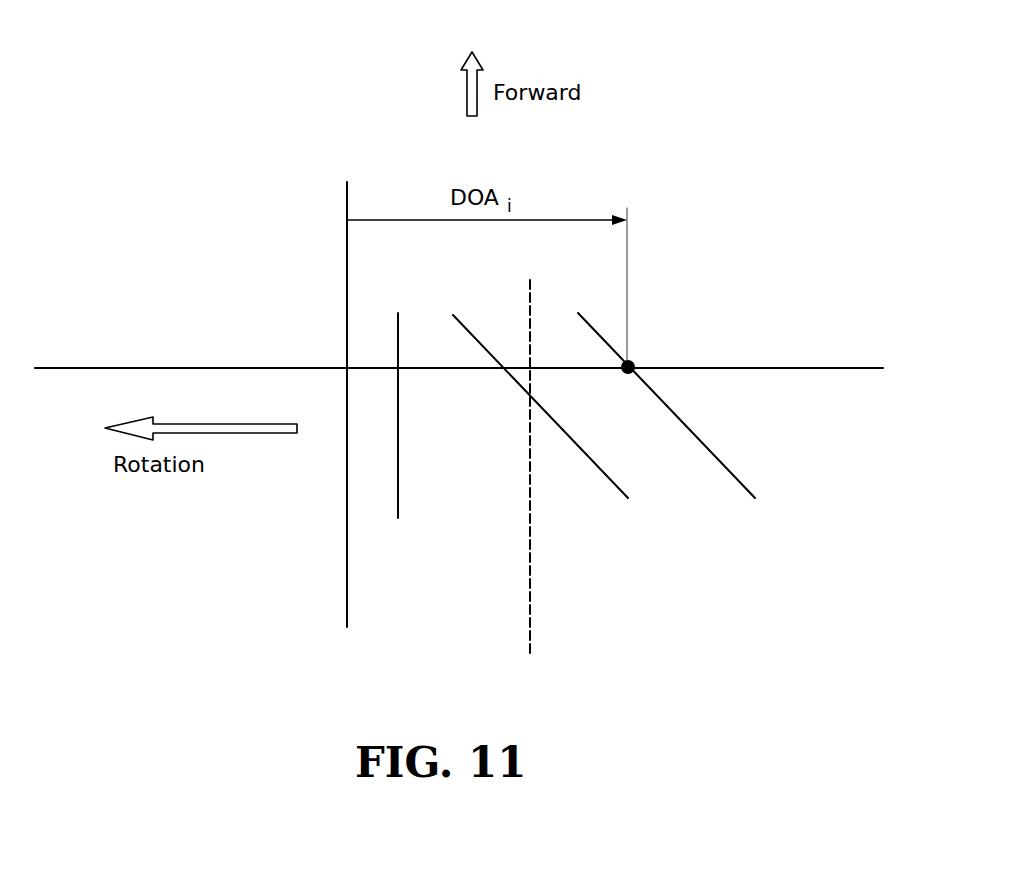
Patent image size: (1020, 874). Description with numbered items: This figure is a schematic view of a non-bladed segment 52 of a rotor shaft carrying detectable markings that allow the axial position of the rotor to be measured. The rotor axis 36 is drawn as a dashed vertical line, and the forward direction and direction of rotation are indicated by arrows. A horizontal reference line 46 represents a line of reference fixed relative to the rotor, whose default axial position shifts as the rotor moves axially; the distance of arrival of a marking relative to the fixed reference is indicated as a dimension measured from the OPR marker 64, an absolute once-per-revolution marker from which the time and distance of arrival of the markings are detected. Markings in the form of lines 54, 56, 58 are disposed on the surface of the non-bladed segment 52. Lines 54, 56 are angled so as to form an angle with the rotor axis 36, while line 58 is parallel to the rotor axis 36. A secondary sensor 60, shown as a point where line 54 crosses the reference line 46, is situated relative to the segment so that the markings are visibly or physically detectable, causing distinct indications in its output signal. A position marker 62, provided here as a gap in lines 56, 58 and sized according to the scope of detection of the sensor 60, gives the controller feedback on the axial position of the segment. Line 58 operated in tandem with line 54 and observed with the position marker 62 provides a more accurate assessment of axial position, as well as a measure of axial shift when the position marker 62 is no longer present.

The rotor axis 36 is at (530, 558).
The reference line 46 is at (767, 367).
The non-bladed segment 52 is at (710, 123).
The line 54 is at (722, 460).
The line 56 is at (597, 463).
The line 58 is at (398, 472).
The secondary sensor 60 is at (636, 362).
The position marker 62 is at (478, 344).
The OPR marker 64 is at (347, 493).